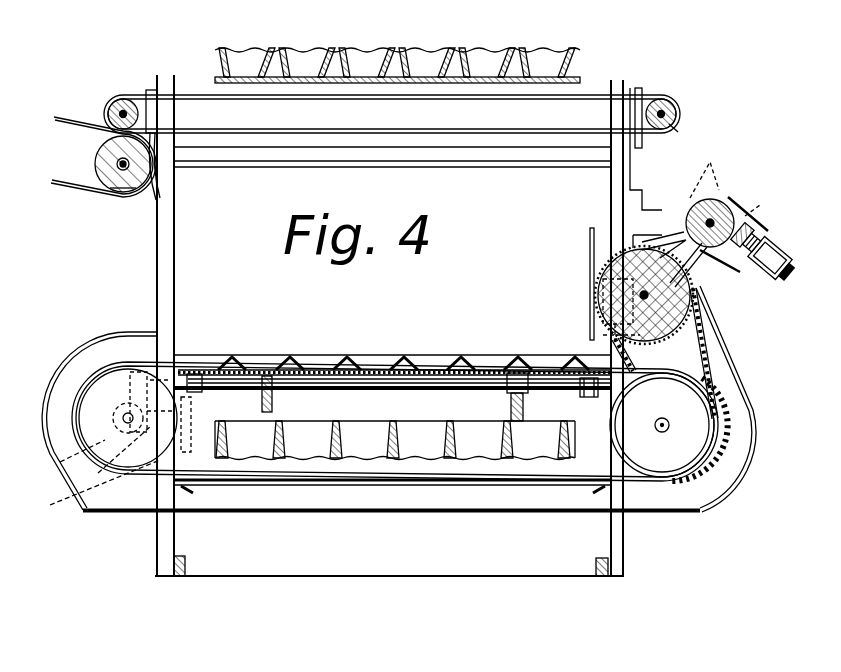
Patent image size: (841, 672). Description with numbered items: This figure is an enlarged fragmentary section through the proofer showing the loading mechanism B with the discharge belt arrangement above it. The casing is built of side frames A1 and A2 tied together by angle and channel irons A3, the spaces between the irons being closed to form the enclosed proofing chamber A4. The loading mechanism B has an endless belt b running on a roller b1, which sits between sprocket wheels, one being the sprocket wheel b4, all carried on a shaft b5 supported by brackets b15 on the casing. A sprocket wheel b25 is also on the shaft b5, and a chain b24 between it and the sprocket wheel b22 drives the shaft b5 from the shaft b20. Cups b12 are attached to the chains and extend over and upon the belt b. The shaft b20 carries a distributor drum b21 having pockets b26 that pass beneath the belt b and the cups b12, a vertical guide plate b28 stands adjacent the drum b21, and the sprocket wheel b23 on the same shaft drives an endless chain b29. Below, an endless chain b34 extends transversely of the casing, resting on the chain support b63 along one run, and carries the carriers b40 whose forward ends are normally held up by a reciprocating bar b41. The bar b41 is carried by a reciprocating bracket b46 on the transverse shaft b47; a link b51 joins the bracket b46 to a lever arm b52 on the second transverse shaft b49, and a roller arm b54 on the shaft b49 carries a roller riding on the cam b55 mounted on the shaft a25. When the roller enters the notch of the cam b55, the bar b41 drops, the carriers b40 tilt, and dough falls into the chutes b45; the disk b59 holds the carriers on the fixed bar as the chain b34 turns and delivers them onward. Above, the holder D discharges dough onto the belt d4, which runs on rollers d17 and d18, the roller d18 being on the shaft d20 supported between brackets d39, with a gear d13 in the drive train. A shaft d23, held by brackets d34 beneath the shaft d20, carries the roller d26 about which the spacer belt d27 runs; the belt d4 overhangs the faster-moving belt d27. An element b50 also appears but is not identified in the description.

The shaft d20 is at (110, 110).
The roller d18 is at (118, 98).
The brackets d39 is at (147, 110).
The discharge belt d4 is at (195, 94).
The shaft d23 is at (118, 163).
The spacer belt d27 is at (62, 186).
The roller d26 is at (122, 192).
The brackets d34 is at (147, 188).
The gear d13 is at (672, 105).
The roller d17 is at (676, 128).
The side frame A1 is at (175, 222).
The side frame A2 is at (620, 177).
The angle and channel irons A3 is at (565, 160).
The proofing chamber A4 is at (392, 181).
The holder D is at (397, 41).
The loading mechanism B is at (383, 378).
The endless belt b is at (757, 223).
The roller b1 is at (740, 208).
The sprocket wheel b4 is at (674, 222).
The shaft b5 is at (723, 205).
The cups b12 is at (713, 159).
The brackets b15 is at (651, 218).
The shaft b20 is at (592, 305).
The distributor drum b21 is at (592, 285).
The sprocket wheel b22 is at (592, 320).
The sprocket wheel b23 is at (612, 335).
The chain b24 is at (703, 273).
The sprocket wheel b25 is at (747, 207).
The pockets b26 is at (592, 290).
The vertical guide plate b28 is at (592, 244).
The endless chain b29 is at (693, 350).
The endless chain b34 is at (162, 470).
The carriers b40 is at (258, 354).
The reciprocating bar b41 is at (372, 384).
The chutes b45 is at (492, 440).
The reciprocating bracket b46 is at (281, 404).
The transverse shaft b47 is at (432, 385).
The second transverse shaft b49 is at (177, 341).
The drum b50 is at (110, 437).
The link b51 is at (287, 390).
The lever arm b52 is at (317, 384).
The roller arm b54 is at (133, 404).
The cam b55 is at (147, 375).
The disk b59 is at (690, 437).
The chain support b63 is at (376, 430).
The shaft a25 is at (88, 493).